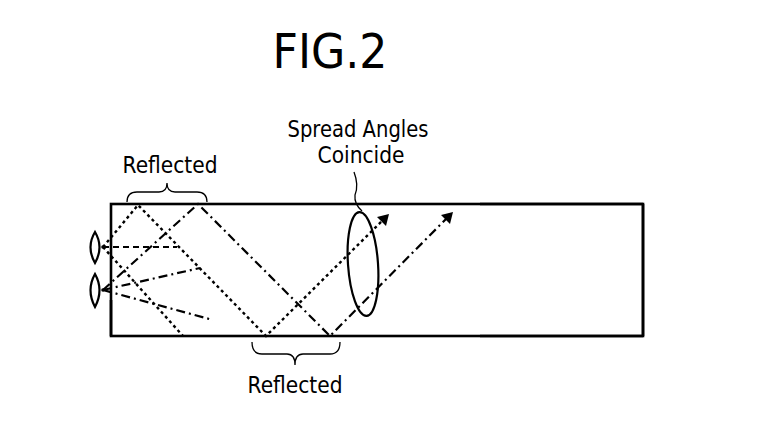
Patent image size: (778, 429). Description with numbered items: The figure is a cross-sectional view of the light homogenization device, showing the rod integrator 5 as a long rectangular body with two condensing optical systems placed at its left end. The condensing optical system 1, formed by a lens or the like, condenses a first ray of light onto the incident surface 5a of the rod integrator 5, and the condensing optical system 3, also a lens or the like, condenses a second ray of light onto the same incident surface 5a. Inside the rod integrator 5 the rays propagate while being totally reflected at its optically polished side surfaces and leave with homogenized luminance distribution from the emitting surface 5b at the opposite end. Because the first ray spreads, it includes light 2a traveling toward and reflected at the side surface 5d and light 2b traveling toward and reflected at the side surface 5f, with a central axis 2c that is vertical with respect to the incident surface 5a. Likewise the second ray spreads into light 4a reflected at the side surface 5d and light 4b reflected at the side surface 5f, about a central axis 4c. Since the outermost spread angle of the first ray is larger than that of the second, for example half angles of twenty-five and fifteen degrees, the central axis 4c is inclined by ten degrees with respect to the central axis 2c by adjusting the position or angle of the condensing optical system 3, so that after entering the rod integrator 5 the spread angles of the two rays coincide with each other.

The condensing optical system 1 is at (89, 247).
The condensing optical system 3 is at (89, 290).
The light traveling toward side surface 5d 2a is at (120, 210).
The light traveling toward side surface 5f 2b is at (172, 326).
The central axis of the ray of light 2 2c is at (138, 248).
The light traveling toward side surface 5d 4a is at (199, 207).
The light traveling toward side surface 5f 4b is at (142, 306).
The central axis of the ray of light 4 4c is at (154, 282).
The rod integrator 5 is at (434, 345).
The incident surface 5a is at (110, 327).
The emitting surface 5b is at (645, 273).
The side surface 5d is at (570, 204).
The side surface 5f is at (556, 337).